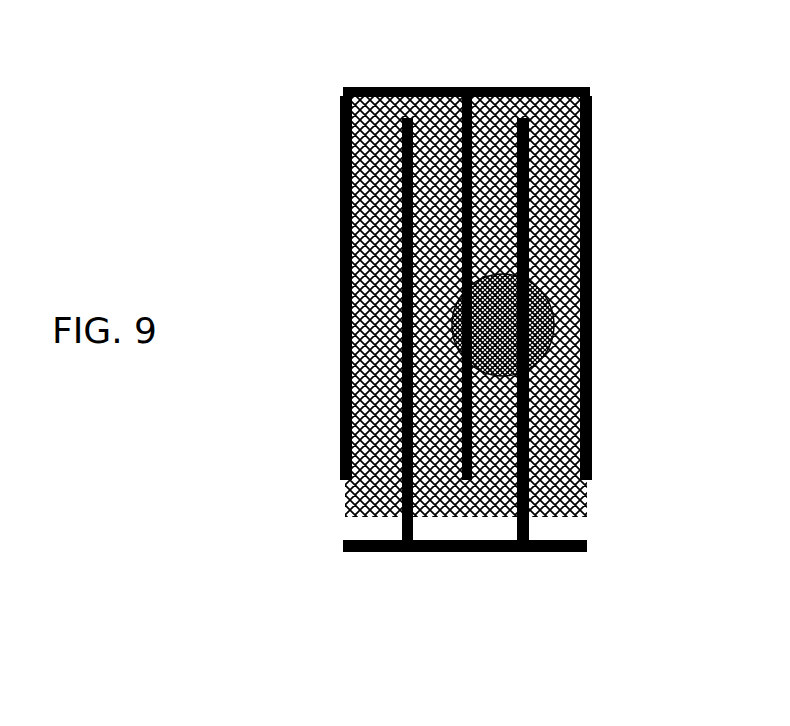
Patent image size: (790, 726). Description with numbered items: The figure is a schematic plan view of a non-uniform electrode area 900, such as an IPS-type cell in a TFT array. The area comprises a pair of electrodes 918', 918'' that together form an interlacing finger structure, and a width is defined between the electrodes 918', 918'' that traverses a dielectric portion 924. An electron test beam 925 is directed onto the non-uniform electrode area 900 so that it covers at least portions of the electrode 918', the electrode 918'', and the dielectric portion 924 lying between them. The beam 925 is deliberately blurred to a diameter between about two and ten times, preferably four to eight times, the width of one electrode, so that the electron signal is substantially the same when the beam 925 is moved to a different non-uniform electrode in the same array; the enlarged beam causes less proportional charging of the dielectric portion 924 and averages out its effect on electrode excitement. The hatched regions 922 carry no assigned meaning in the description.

The non-uniform electrode area 900 is at (270, 289).
The electrode 918' is at (508, 256).
The electrode 918'' is at (427, 562).
The dielectric region 922 is at (375, 178).
The dielectric portion 924 is at (373, 420).
The electron test beam 925 is at (555, 320).